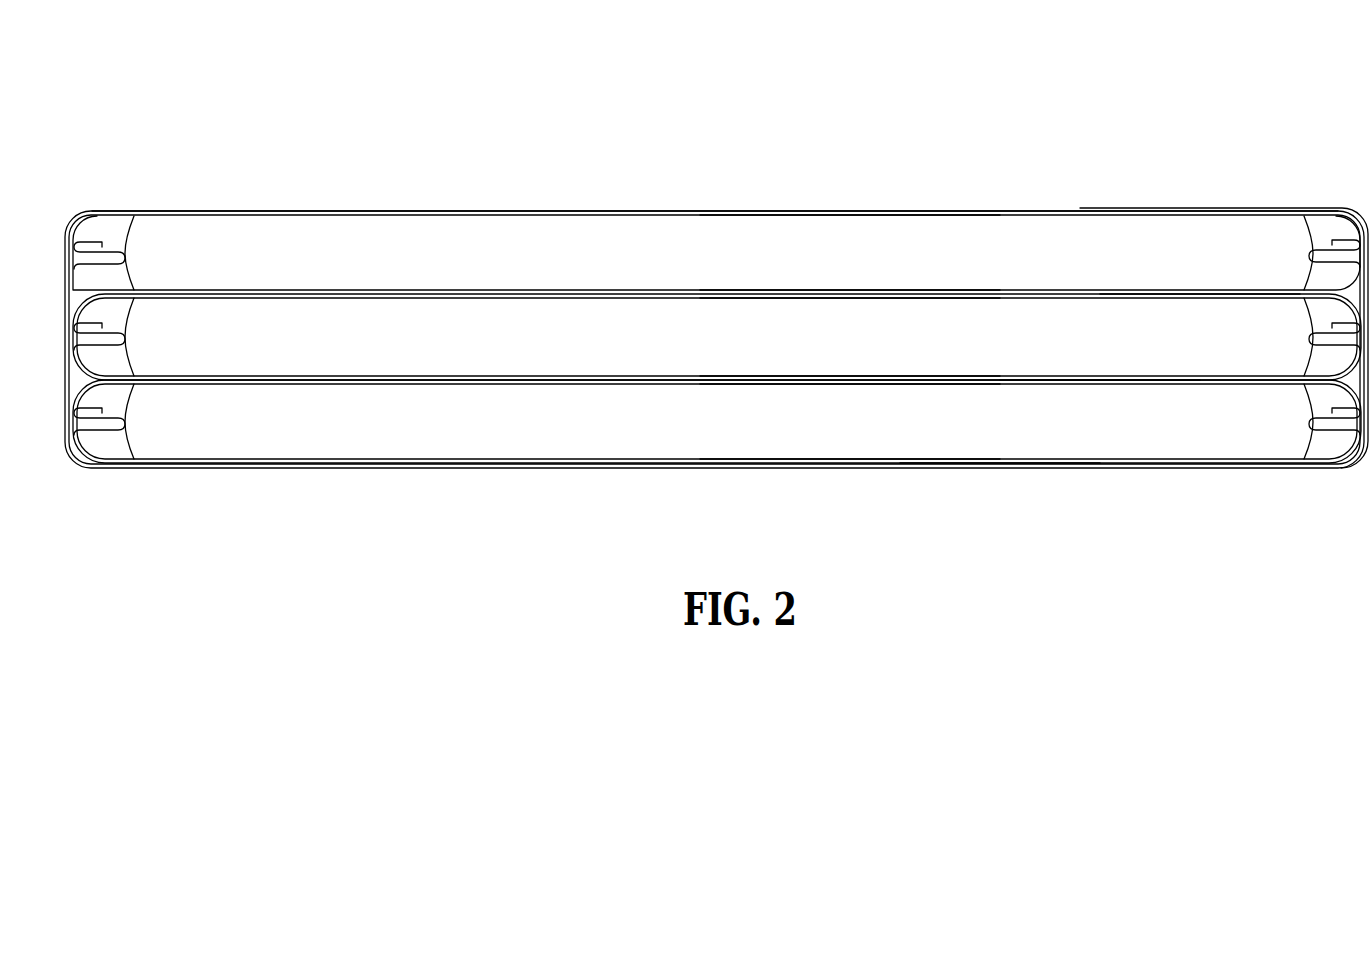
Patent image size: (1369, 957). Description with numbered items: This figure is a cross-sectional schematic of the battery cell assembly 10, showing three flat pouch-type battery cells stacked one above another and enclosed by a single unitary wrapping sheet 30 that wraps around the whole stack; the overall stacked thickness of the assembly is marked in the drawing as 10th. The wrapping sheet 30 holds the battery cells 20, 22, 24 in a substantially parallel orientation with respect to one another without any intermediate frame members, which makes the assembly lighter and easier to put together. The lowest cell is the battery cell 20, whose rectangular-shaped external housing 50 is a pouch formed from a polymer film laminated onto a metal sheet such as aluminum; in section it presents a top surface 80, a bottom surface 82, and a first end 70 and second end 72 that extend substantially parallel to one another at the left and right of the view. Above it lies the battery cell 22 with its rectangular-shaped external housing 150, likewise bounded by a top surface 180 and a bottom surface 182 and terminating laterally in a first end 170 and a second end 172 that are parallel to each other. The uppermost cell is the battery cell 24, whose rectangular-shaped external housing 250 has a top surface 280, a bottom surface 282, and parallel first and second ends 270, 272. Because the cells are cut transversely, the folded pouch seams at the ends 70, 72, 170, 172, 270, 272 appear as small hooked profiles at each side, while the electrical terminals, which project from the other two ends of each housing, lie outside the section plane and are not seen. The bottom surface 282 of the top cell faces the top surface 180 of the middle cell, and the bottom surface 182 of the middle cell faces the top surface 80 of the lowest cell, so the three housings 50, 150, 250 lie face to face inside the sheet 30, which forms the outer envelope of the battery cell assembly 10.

The battery cell assembly 10 is at (846, 126).
The thickness of battery module 10th is at (66, 289).
The unitary wrapping sheet 30 is at (542, 203).
The battery cell 20 is at (682, 428).
The battery cell 22 is at (682, 346).
The battery cell 24 is at (682, 261).
The rectangular-shaped external housing 50 is at (993, 427).
The rectangular-shaped external housing 150 is at (1073, 340).
The rectangular-shaped external housing 250 is at (1168, 258).
The first end 70 is at (112, 431).
The second end 72 is at (1352, 434).
The first end 170 is at (112, 346).
The second end 172 is at (1354, 346).
The first end 270 is at (110, 266).
The second end 272 is at (1352, 262).
The top surface 80 is at (866, 384).
The bottom surface 82 is at (796, 459).
The top surface 180 is at (866, 298).
The bottom surface 182 is at (796, 376).
The top surface 280 is at (866, 216).
The bottom surface 282 is at (796, 290).